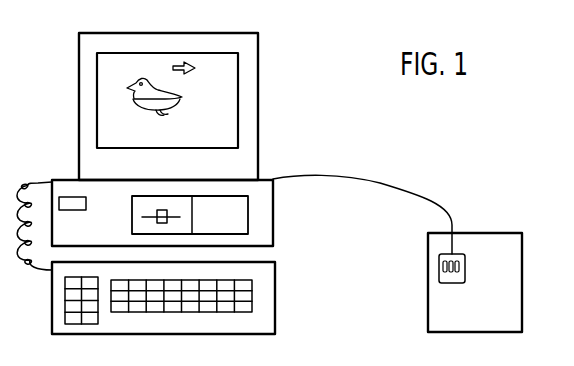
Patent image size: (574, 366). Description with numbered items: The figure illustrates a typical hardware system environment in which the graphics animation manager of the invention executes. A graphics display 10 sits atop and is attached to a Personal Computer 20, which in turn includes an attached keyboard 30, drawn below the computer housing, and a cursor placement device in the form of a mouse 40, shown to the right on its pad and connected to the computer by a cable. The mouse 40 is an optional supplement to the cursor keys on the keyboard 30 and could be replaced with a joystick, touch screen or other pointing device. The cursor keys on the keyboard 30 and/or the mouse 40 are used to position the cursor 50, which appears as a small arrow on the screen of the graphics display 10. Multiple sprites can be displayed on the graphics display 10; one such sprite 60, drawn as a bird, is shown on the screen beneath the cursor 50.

The graphics display 10 is at (259, 98).
The personal computer 20 is at (275, 209).
The keyboard 30 is at (276, 295).
The mouse 40 is at (466, 255).
The cursor 50 is at (184, 61).
The sprite 60 is at (133, 95).